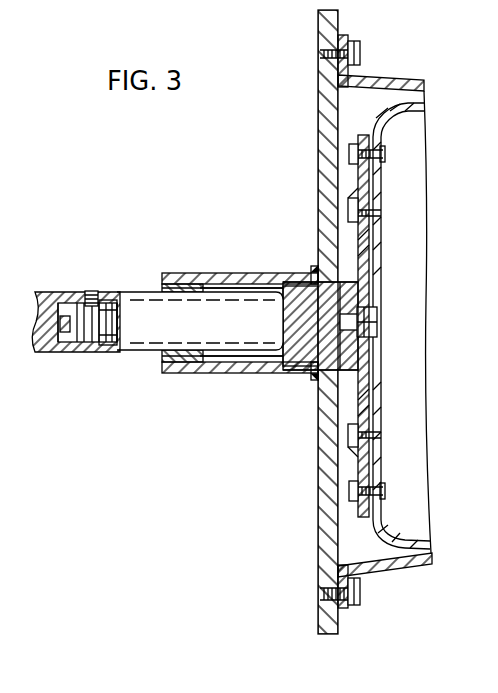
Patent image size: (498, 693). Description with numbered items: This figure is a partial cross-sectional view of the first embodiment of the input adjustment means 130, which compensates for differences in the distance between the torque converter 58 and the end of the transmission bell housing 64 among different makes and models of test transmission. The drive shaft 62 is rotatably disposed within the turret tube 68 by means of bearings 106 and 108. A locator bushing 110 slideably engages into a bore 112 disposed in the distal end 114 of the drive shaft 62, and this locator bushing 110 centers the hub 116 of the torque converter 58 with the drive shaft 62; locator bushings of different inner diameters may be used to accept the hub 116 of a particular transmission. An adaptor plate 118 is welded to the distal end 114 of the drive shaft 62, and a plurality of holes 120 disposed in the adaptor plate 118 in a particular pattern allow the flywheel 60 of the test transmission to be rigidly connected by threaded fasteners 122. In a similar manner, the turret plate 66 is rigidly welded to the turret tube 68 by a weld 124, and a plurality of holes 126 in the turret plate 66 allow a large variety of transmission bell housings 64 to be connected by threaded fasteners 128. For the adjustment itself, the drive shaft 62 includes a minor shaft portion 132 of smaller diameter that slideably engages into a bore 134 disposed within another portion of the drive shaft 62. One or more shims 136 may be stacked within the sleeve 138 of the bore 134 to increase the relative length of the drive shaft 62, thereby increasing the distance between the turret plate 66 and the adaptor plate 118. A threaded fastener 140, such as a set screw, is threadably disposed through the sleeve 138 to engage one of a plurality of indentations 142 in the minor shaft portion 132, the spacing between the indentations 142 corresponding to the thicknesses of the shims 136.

The torque converter 58 is at (415, 128).
The flywheel 60 is at (377, 178).
The drive shaft 62 is at (222, 340).
The transmission bell housing 64 is at (421, 78).
The turret plate 66 is at (326, 128).
The turret tube 68 is at (250, 262).
The bearing 106 is at (196, 282).
The bearing 108 is at (312, 284).
The locator bushing 110 is at (290, 338).
The bore 112 is at (290, 298).
The distal end 114 is at (235, 327).
The hub 116 is at (378, 322).
The adaptor plate 118 is at (352, 250).
The holes 120 is at (366, 182).
The threaded fasteners 122 is at (355, 214).
The weld 124 is at (317, 268).
The holes 126 is at (333, 50).
The threaded fasteners 128 is at (361, 50).
The input adjustment means 130 is at (75, 249).
The minor shaft portion 132 is at (115, 353).
The bore 134 is at (85, 343).
The shims 136 is at (58, 350).
The sleeve 138 is at (63, 296).
The threaded fastener 140 is at (93, 291).
The indentations 142 is at (116, 300).